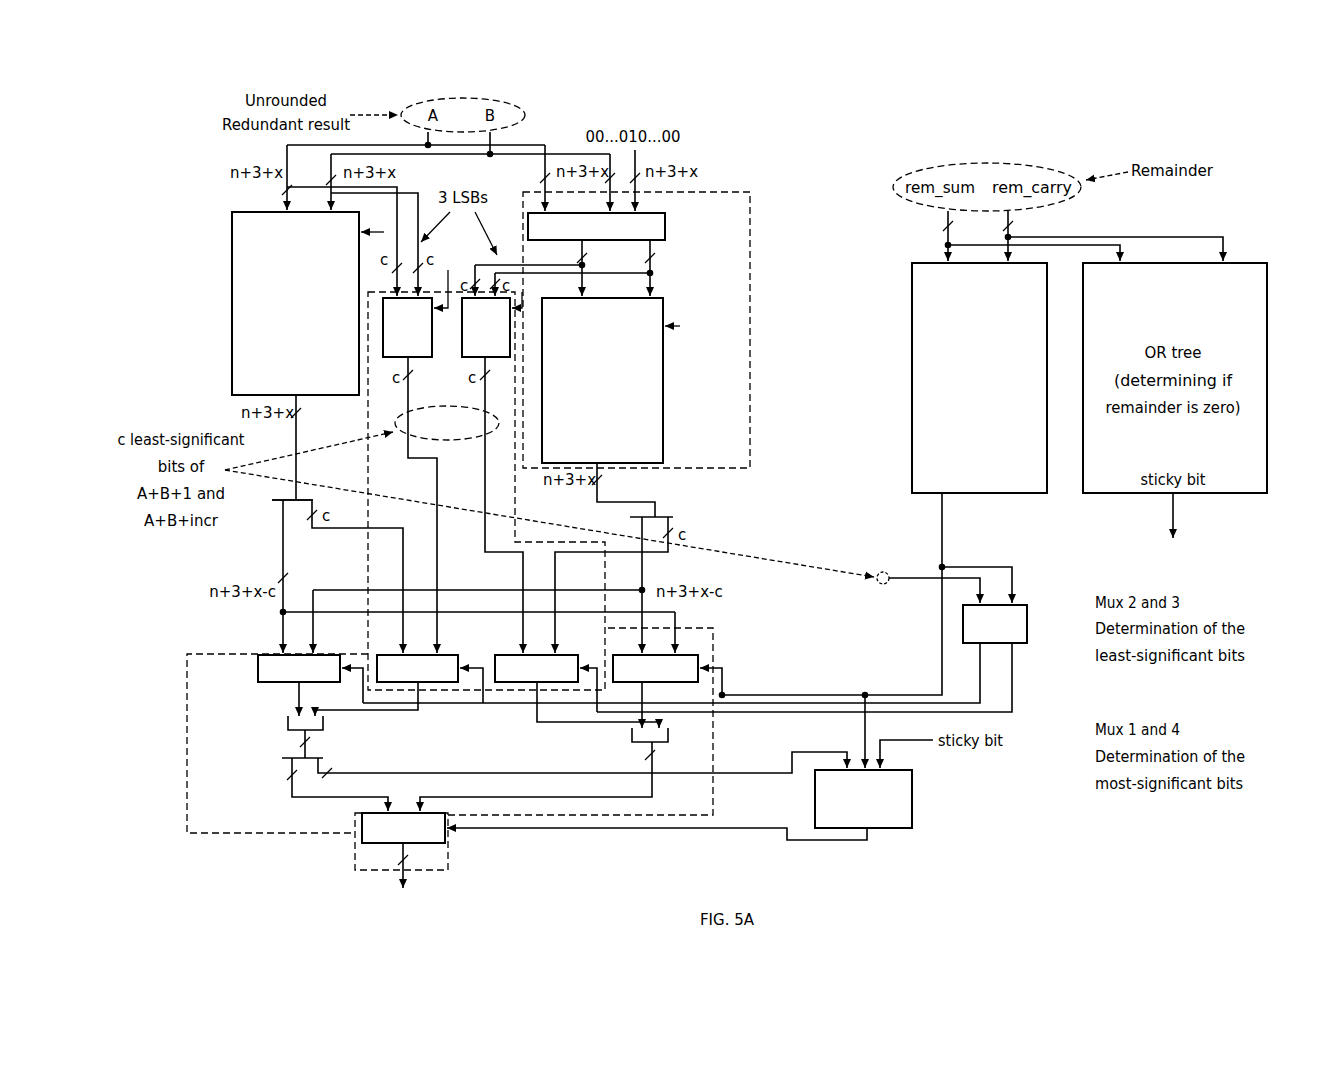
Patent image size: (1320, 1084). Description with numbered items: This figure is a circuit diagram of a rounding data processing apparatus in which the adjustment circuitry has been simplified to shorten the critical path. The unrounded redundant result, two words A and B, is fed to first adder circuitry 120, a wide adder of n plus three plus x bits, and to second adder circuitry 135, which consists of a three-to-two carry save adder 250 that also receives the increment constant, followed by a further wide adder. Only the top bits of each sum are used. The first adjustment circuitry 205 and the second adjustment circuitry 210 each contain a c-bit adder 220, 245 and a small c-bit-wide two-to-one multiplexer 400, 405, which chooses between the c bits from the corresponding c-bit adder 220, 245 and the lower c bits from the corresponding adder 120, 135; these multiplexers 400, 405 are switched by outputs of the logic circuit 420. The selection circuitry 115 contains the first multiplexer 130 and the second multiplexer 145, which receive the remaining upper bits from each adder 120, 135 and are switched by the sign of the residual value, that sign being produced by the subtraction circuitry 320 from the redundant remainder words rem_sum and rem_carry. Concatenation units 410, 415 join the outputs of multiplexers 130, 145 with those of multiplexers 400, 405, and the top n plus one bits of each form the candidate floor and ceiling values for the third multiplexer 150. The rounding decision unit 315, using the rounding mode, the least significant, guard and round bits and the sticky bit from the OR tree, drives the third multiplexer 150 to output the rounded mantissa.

The first adder circuitry 120 is at (232, 325).
The c-bit adder 220 is at (368, 298).
The c-bit adder 245 is at (462, 357).
The 3:2 Carry Save Adder 250 is at (665, 228).
The second adder circuitry 135 is at (638, 352).
The first adjustment circuitry 205 is at (368, 515).
The second adjustment circuitry 210 is at (453, 545).
The first multiplexer 130 is at (258, 668).
The 2:1 multiplexer 400 is at (440, 683).
The 2:1 multiplexer 405 is at (512, 683).
The second multiplexer 145 is at (700, 657).
The concatenation unit 410 is at (288, 722).
The concatenation unit 415 is at (668, 738).
The third multiplexer 150 is at (362, 830).
The selection circuitry 115 is at (187, 723).
The rounding decision unit 315 is at (912, 805).
The subtraction circuitry 320 is at (1010, 493).
The logic circuit 420 is at (1025, 603).